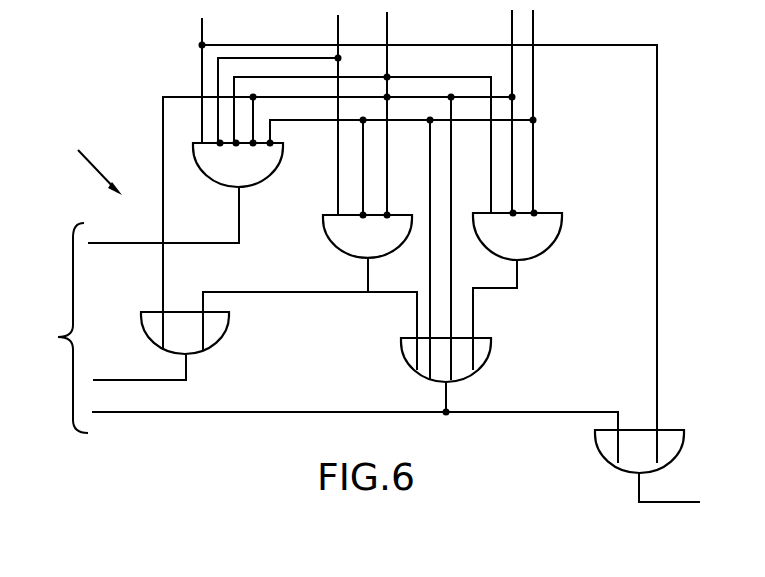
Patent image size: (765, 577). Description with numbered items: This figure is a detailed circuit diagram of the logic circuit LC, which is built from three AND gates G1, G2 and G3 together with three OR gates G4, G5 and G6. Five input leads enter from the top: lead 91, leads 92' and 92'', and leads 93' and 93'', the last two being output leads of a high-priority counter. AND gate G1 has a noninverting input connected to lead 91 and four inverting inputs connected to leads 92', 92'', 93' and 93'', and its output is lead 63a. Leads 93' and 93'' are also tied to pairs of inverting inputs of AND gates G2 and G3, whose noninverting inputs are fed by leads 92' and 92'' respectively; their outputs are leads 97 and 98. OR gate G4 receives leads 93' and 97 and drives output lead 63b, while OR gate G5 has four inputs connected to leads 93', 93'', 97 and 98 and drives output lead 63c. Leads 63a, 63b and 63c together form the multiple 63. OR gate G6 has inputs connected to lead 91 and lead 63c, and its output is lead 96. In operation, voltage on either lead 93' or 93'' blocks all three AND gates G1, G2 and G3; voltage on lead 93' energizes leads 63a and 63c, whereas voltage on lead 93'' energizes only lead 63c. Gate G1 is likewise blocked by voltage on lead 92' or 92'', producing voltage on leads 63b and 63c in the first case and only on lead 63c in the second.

The logic circuit LC is at (93, 161).
The lead 91 is at (200, 30).
The lead 92' is at (280, 115).
The lead 92'' is at (362, 113).
The output lead of high-priority counter 93' is at (339, 195).
The output lead of high-priority counter 93'' is at (430, 195).
The AND gate G1 is at (261, 169).
The AND gate G2 is at (340, 235).
The AND gate G3 is at (542, 237).
The OR gate G4 is at (213, 326).
The OR gate G5 is at (480, 350).
The OR gate G6 is at (607, 441).
The multiple 63 is at (57, 337).
The output lead 63a is at (113, 247).
The output lead 63b is at (114, 380).
The output lead 63c is at (118, 419).
The lead 96 is at (670, 505).
The output lead 97 is at (337, 294).
The output lead 98 is at (497, 290).